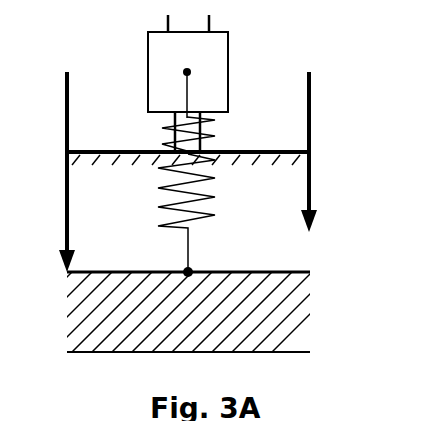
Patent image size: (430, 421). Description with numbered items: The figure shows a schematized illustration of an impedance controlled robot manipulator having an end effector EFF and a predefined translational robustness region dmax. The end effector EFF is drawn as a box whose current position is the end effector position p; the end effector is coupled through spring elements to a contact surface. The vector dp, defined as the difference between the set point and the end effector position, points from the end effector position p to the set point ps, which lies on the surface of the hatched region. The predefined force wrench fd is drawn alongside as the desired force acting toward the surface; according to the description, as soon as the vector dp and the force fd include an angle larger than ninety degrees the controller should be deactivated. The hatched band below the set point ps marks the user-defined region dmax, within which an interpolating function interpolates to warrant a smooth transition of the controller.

The end effector EFF is at (242, 49).
The end effector position p is at (201, 89).
The vector Δp dp is at (40, 172).
The predefined force wrench f_d fd is at (327, 152).
The set point p_s ps is at (204, 259).
The translational robustness region d_max dmax is at (312, 273).